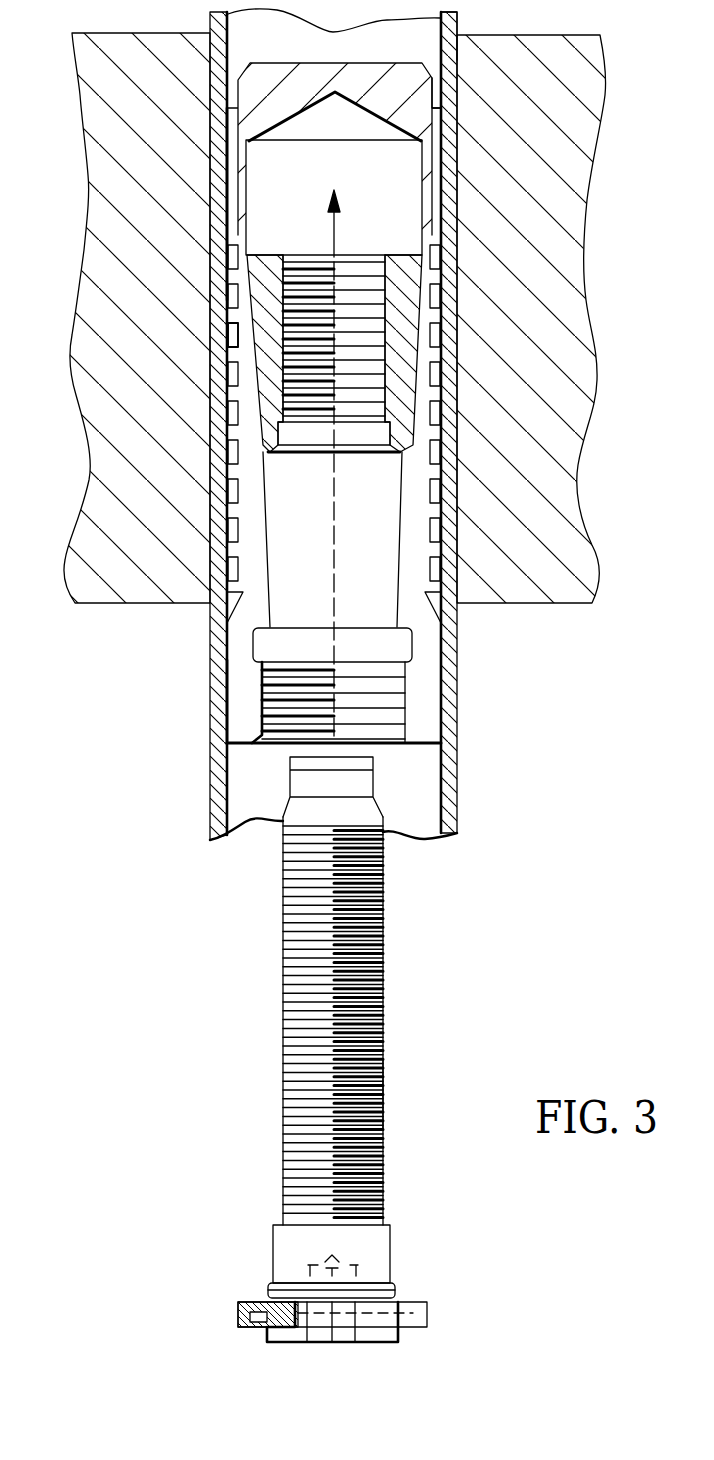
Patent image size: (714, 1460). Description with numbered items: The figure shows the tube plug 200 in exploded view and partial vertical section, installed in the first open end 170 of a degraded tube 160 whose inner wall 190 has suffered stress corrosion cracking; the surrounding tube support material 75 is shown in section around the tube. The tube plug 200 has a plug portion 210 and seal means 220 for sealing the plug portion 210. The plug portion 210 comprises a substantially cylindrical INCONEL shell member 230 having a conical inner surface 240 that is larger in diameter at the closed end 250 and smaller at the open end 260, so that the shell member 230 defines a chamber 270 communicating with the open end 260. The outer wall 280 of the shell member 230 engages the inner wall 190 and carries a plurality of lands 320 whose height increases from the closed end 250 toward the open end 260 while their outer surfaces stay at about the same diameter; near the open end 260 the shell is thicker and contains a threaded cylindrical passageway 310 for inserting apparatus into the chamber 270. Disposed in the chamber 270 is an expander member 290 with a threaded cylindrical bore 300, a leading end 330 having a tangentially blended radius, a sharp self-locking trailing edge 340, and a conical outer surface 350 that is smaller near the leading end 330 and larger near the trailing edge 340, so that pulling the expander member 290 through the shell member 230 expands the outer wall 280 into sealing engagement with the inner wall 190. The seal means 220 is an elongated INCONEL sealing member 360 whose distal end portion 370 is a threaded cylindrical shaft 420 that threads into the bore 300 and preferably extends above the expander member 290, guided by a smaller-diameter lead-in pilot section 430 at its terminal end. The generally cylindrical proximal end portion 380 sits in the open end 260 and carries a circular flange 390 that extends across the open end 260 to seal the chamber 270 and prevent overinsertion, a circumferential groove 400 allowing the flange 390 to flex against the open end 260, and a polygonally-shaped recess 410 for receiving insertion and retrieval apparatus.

The housing 75 is at (118, 150).
The tube 160 is at (452, 37).
The plug portion 210 is at (213, 32).
The closed end 250 is at (318, 75).
The inner wall 190 is at (440, 80).
The shell member 230 is at (247, 124).
The chamber 270 is at (248, 202).
The threaded cylindrical bore 300 is at (320, 257).
The trailing edge 340 is at (405, 255).
The outer wall 280 is at (230, 282).
The expander member 290 is at (232, 320).
The lands 320 is at (228, 398).
The conical outer surface 350 is at (440, 345).
The leading end 330 is at (266, 448).
The conical inner surface 240 is at (270, 570).
The threaded cylindrical passageway 310 is at (285, 680).
The open end 260 is at (237, 697).
The first open end 170 is at (228, 730).
The lead-in pilot section 430 is at (343, 790).
The seal means 220 is at (274, 940).
The tube plug 200 is at (506, 835).
The sealing member 360 is at (383, 967).
The distal end portion 370 is at (383, 1023).
The threaded cylindrical shaft 420 is at (383, 1095).
The proximal end portion 380 is at (388, 1247).
The polygonally-shaped recess 410 is at (363, 1270).
The flange 390 is at (257, 1302).
The circumferential groove 400 is at (262, 1328).